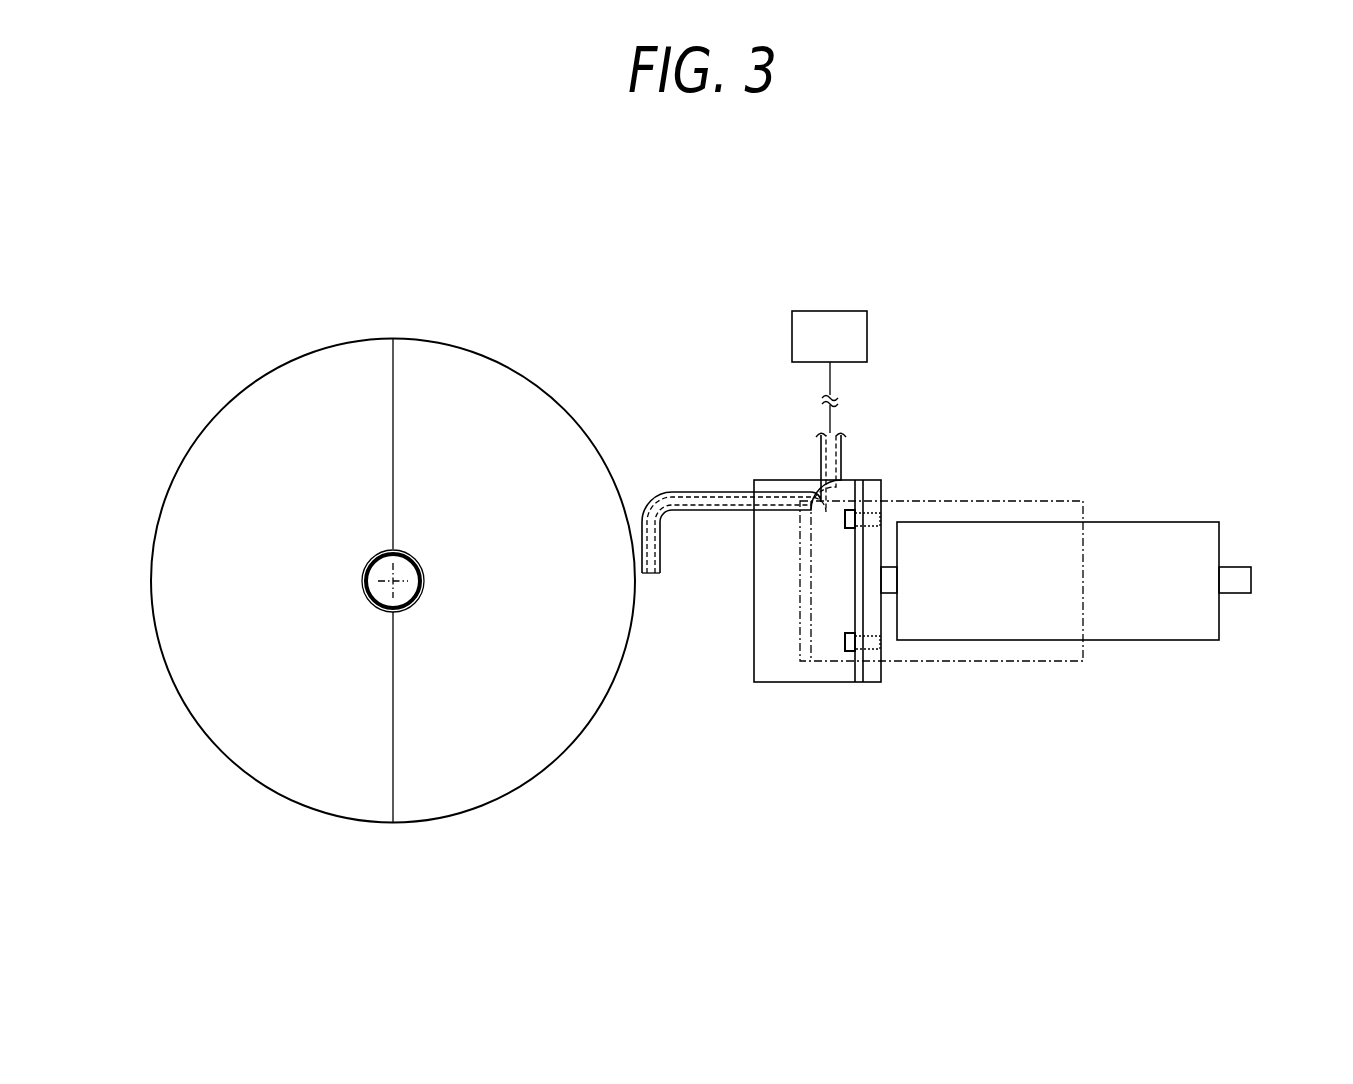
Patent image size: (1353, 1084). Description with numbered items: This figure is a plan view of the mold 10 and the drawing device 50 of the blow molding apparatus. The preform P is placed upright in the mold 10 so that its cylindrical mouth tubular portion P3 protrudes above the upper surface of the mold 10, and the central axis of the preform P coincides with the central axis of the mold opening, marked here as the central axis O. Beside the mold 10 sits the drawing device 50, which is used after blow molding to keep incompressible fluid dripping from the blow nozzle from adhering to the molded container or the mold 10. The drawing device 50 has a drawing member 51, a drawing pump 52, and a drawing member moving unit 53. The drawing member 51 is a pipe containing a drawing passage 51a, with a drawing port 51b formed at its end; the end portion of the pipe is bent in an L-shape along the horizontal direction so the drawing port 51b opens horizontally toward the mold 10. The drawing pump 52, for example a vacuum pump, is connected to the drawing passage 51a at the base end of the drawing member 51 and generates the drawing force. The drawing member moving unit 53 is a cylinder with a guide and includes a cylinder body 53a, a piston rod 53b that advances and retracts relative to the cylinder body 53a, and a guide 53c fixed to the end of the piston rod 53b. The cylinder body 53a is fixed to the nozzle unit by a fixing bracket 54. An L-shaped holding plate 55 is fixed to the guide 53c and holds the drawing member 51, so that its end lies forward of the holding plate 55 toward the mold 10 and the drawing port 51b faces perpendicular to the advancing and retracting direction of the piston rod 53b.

The mold 10 is at (467, 350).
The preform P is at (418, 556).
The mouth tubular portion P3 is at (420, 588).
The central axis O is at (392, 581).
The drawing device 50 is at (1002, 575).
The drawing member 51 is at (744, 536).
The drawing passage 51a is at (715, 500).
The drawing port 51b is at (650, 576).
The drawing pump 52 is at (845, 311).
The drawing member moving unit 53 is at (1066, 572).
The cylinder body 53a is at (1143, 621).
The piston rod 53b is at (887, 578).
The guide 53c is at (872, 673).
The fixing bracket 54 is at (1003, 665).
The holding plate 55 is at (778, 673).